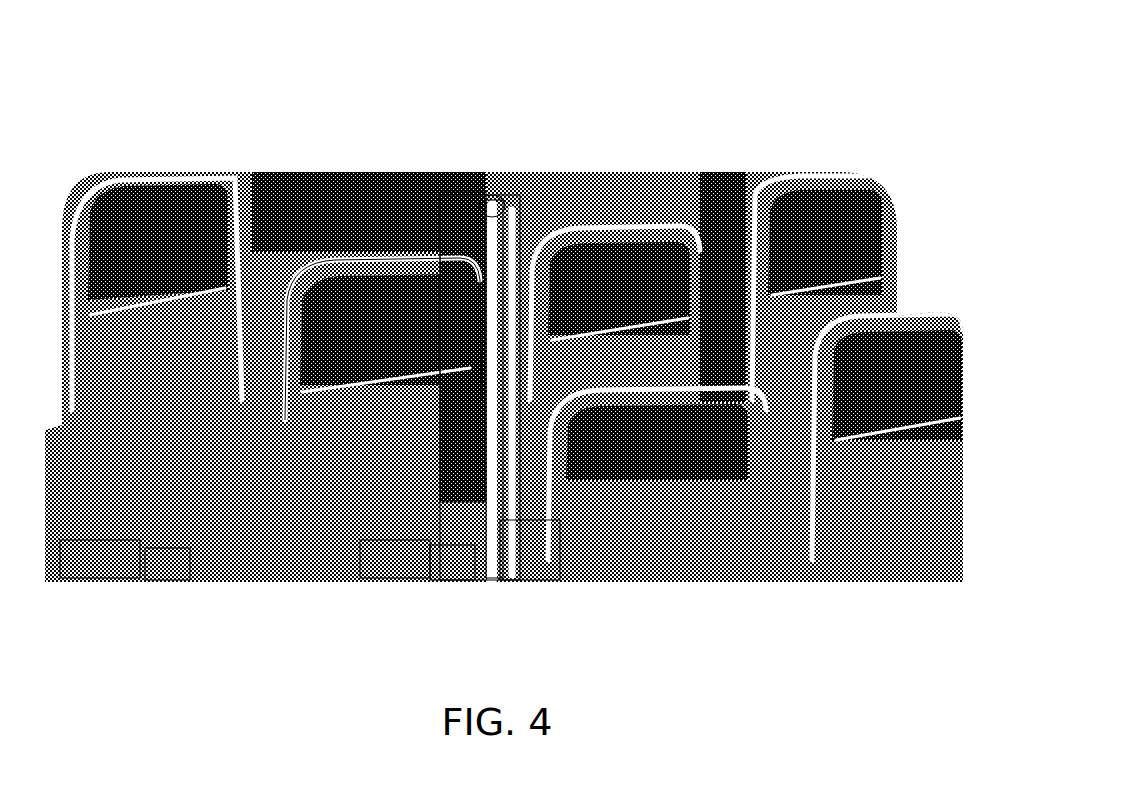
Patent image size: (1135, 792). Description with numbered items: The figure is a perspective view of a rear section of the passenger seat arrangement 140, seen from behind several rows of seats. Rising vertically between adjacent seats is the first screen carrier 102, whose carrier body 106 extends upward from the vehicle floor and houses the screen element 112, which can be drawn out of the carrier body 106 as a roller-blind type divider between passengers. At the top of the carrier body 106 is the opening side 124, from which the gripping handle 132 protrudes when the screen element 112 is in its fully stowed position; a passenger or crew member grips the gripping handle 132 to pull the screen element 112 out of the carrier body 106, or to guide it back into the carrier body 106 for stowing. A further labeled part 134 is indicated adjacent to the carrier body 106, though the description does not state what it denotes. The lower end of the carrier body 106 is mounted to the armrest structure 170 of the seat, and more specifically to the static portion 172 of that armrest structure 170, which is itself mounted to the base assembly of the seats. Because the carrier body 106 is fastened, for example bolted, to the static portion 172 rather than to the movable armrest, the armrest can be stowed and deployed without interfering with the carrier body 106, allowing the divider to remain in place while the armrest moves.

The first screen carrier 102 is at (528, 168).
The carrier body 106 is at (525, 582).
The screen element 112 is at (500, 192).
The opening side 124 is at (486, 198).
The gripping handle 132 is at (380, 250).
The rollerblind panel 134 is at (458, 188).
The passenger seat arrangement 140 is at (798, 107).
The armrest structure 170 is at (118, 556).
The static portion 172 is at (150, 576).